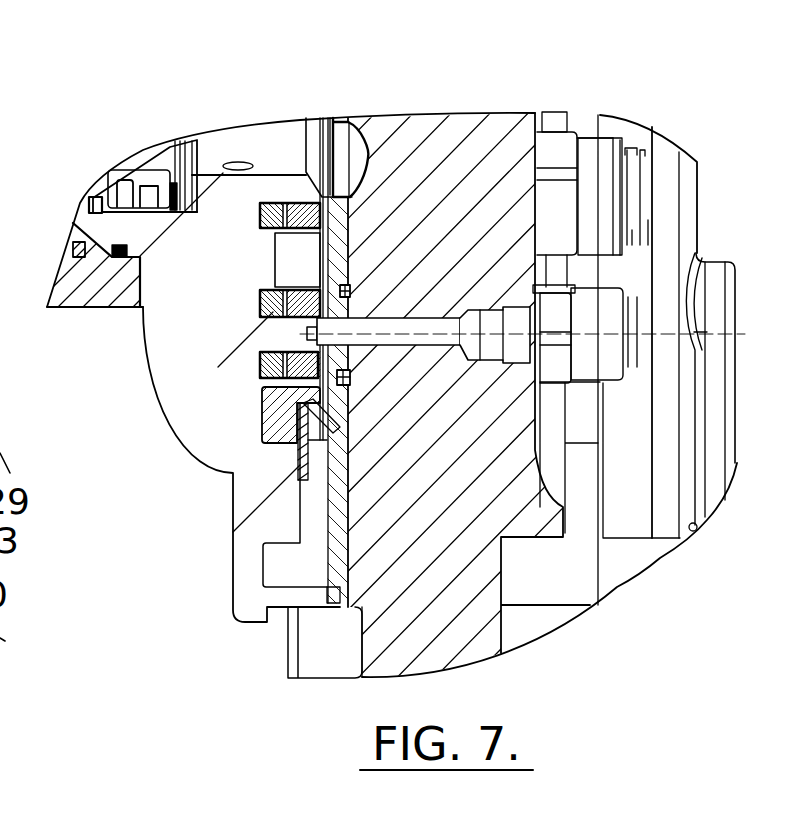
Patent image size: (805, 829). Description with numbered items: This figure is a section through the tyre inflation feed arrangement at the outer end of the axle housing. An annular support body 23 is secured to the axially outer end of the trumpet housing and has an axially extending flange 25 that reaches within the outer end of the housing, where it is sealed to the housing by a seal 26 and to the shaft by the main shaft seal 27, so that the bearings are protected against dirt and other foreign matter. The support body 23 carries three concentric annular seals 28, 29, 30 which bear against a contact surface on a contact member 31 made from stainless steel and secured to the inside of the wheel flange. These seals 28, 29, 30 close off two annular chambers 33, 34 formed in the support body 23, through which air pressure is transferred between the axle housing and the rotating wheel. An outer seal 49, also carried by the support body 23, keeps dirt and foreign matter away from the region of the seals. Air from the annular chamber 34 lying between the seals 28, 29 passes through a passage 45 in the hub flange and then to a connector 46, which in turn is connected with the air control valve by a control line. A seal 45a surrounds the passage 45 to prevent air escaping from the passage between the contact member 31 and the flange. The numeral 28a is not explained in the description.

The annular support body 23 is at (172, 297).
The axially extending flange 25 is at (89, 210).
The seal 26 is at (133, 233).
The main shaft seal 27 is at (160, 162).
The annular seal 28 is at (313, 363).
The spacer 28a is at (22, 367).
The annular seal 29 is at (280, 290).
The annular seal 30 is at (318, 217).
The contact member 31 is at (335, 537).
The annular chamber 33 is at (300, 253).
The annular chamber 34 is at (307, 333).
The passage 45 is at (415, 335).
The seal 45a is at (347, 383).
The connector 46 is at (600, 353).
The outer seal 49 is at (280, 418).